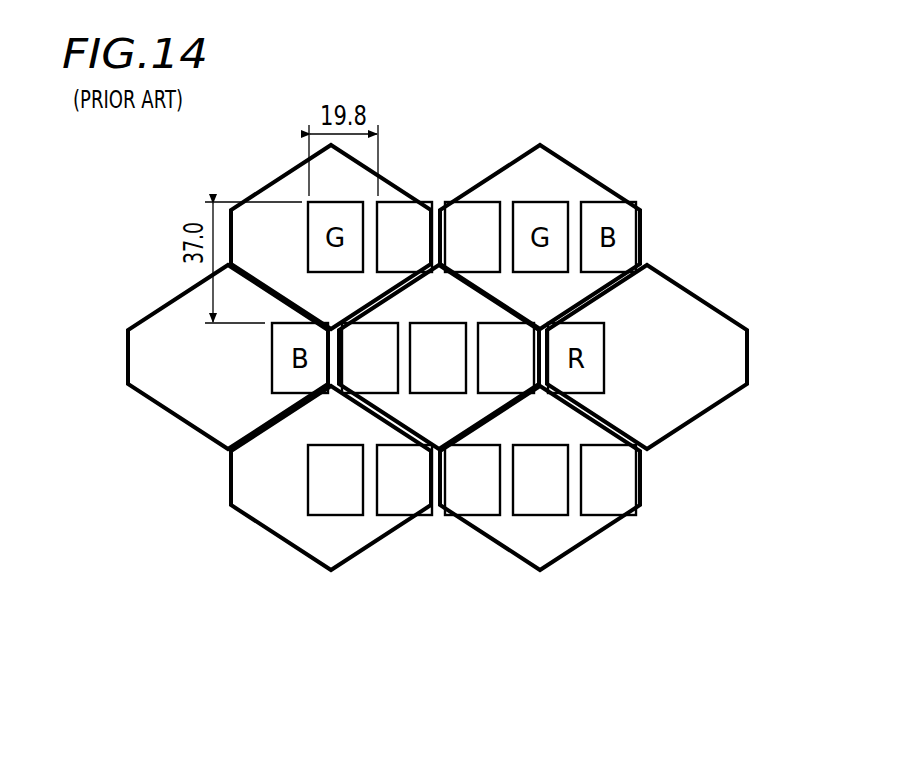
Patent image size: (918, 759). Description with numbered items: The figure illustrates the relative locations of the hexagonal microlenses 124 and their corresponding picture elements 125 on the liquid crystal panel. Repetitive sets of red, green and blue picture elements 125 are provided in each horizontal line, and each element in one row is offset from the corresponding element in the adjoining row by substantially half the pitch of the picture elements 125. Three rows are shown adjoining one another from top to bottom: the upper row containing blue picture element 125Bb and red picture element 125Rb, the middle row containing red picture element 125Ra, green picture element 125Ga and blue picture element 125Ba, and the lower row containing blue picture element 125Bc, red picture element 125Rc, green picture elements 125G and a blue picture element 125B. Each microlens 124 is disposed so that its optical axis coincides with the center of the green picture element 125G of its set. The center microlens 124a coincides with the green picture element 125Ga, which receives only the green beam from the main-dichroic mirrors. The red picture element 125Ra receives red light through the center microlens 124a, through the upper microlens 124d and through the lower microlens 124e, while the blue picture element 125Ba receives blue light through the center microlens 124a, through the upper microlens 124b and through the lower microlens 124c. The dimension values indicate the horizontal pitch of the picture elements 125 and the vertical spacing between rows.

The microlens 124 is at (157, 404).
The center microlens 124a is at (380, 403).
The upper microlens 124b is at (588, 182).
The lower microlens 124c is at (608, 432).
The upper microlens 124d is at (270, 186).
The lower microlens 124e is at (253, 525).
The picture elements 125 is at (490, 566).
The blue picture element 125B is at (624, 529).
The blue picture element 125Ba is at (505, 386).
The blue picture element 125Bb is at (405, 205).
The blue picture element 125Bc is at (397, 515).
The green picture element 125G is at (345, 515).
The green picture element 125Ga is at (443, 326).
The red picture element 125Ra is at (347, 333).
The red picture element 125Rb is at (478, 205).
The red picture element 125Rc is at (473, 515).